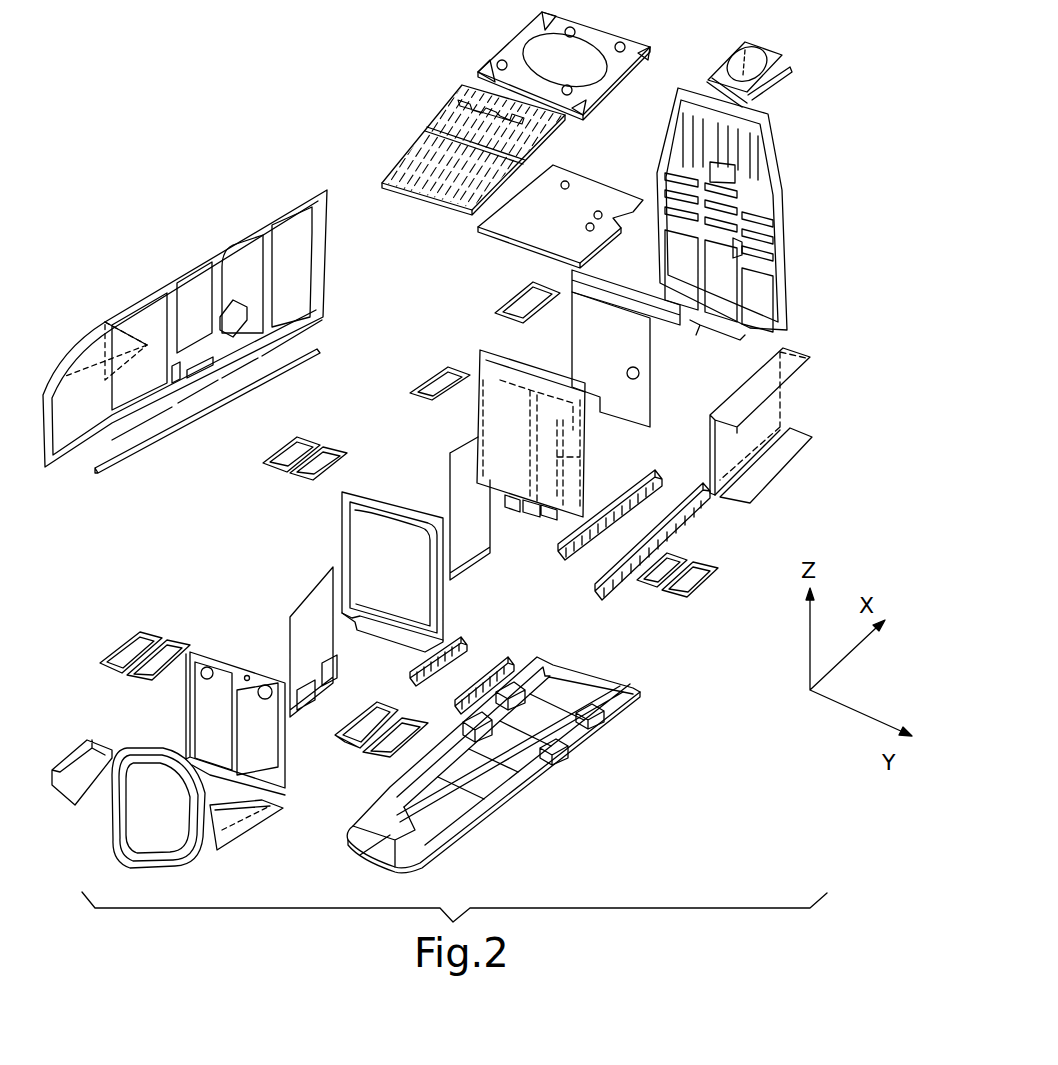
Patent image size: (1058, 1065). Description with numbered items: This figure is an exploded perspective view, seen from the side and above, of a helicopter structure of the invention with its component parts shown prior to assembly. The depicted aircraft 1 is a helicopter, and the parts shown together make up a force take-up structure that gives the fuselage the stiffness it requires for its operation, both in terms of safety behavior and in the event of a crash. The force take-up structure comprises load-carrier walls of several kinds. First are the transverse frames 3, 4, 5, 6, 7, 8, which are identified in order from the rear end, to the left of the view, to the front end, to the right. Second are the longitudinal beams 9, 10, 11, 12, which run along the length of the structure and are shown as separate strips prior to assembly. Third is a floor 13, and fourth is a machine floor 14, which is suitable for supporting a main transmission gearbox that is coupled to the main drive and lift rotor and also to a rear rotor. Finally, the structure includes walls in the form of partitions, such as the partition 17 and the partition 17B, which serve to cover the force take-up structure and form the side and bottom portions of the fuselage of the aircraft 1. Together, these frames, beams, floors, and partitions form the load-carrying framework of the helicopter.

The aircraft 1 is at (311, 92).
The transverse frame 3 is at (265, 180).
The transverse frame 4 is at (187, 694).
The transverse frame 5 is at (340, 507).
The transverse frame 6 is at (476, 360).
The transverse frame 7 is at (653, 340).
The transverse frame 8 is at (790, 288).
The longitudinal beam 9 is at (437, 664).
The longitudinal beam 10 is at (487, 669).
The longitudinal beam 11 is at (565, 538).
The longitudinal beam 12 is at (690, 520).
The floor 13 is at (478, 235).
The machine floor 14 is at (395, 132).
The partition 17 is at (148, 397).
The partition 17B is at (580, 743).